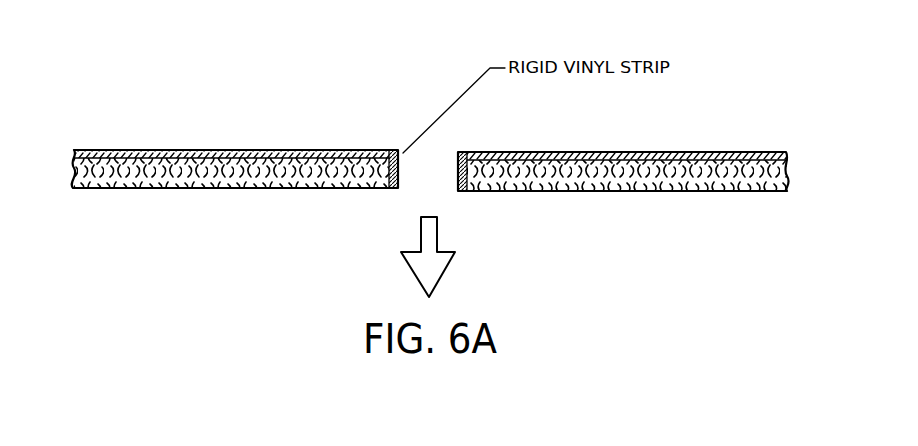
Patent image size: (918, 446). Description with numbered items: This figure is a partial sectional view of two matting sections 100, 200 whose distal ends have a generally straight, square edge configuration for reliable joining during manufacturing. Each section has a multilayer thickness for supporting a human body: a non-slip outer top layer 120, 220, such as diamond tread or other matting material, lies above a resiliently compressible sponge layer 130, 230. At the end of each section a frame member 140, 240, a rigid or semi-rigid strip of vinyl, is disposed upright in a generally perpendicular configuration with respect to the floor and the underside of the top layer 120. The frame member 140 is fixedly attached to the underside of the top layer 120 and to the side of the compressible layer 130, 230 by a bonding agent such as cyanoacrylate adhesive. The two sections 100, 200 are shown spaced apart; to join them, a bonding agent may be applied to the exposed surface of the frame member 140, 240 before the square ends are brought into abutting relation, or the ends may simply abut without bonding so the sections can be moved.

The matting construction 100 is at (229, 143).
The non-slip outer/top layer 120 is at (346, 146).
The resiliently compressible layer 130 is at (139, 190).
The frame member 140 is at (400, 185).
The matting construction 200 is at (624, 156).
The non-slip outer/top layer 220 is at (651, 152).
The resiliently compressible layer 230 is at (637, 186).
The frame member 240 is at (459, 171).